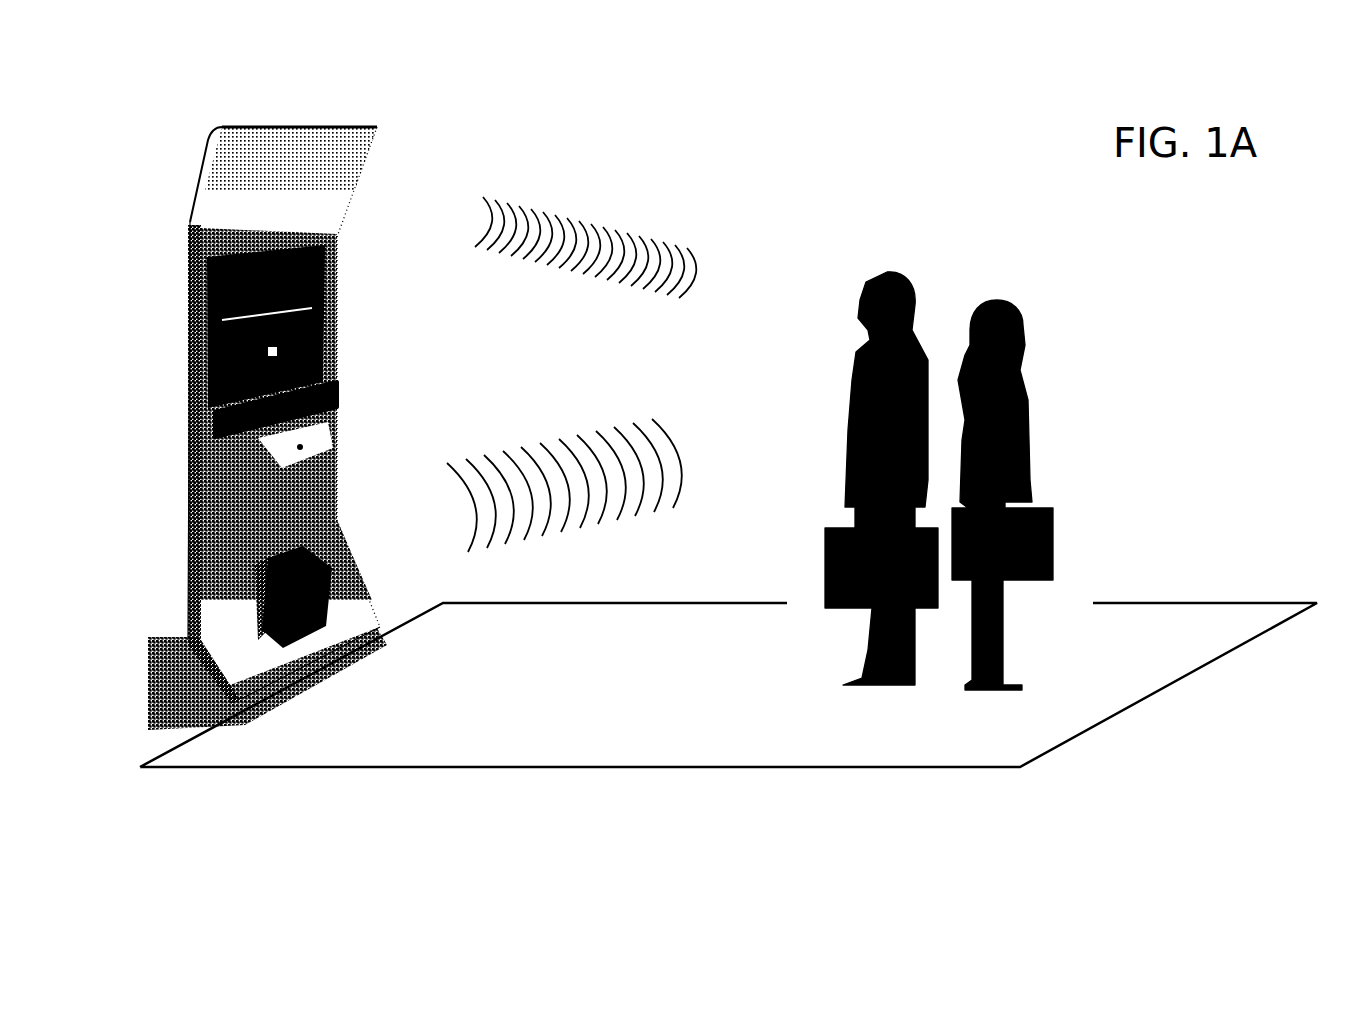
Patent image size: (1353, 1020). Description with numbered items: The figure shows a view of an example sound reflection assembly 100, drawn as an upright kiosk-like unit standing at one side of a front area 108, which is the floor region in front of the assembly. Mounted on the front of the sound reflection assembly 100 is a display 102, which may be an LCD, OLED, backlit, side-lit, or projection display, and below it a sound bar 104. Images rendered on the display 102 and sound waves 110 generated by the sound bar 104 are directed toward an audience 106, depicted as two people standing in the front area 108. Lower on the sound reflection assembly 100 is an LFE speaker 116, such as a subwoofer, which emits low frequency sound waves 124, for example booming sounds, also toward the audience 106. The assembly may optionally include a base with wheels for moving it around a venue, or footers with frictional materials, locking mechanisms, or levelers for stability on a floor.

The sound reflection assembly 100 is at (272, 400).
The display 102 is at (317, 290).
The sound bar 104 is at (340, 397).
The audience 106 is at (912, 285).
The front area 108 is at (1155, 617).
The sound waves 110 is at (637, 252).
The LFE speaker 116 is at (267, 572).
The low frequency sound waves 124 is at (583, 447).